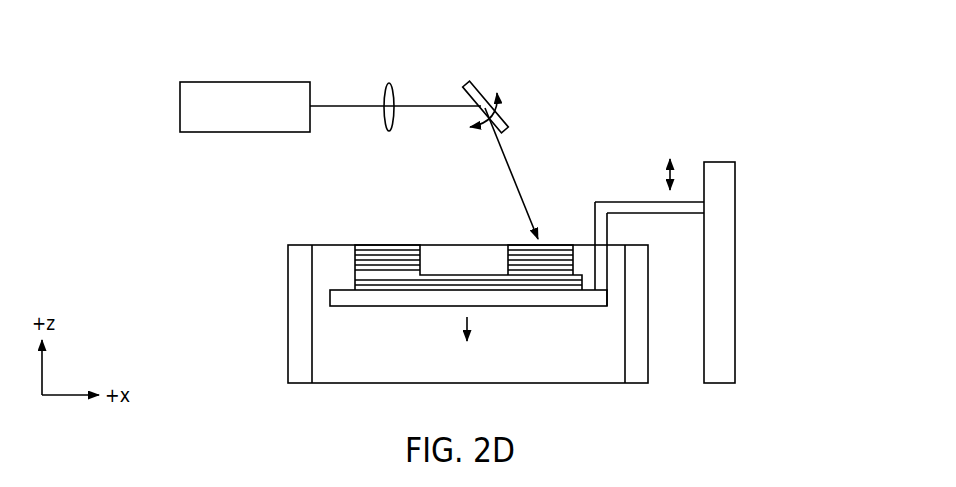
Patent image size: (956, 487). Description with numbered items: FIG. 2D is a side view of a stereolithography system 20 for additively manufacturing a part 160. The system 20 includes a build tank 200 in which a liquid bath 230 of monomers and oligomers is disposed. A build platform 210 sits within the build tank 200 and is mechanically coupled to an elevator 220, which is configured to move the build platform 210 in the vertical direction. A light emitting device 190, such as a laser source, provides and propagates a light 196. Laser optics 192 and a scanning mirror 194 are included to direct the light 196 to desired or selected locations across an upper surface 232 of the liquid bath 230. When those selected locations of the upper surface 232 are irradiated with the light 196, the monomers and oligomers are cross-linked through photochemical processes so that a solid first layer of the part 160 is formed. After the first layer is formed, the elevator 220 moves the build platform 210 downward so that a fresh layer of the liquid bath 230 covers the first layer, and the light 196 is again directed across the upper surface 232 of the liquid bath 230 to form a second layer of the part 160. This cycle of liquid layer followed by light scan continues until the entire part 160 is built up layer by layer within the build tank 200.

The system 20 is at (735, 87).
The light emitting device 190 is at (176, 104).
The laser optics 192 is at (389, 82).
The scanning mirror 194 is at (466, 83).
The light 196 is at (512, 170).
The build tank 200 is at (284, 268).
The build platform 210 is at (520, 299).
The elevator 220 is at (740, 207).
The liquid bath 230 is at (402, 351).
The part 160 is at (378, 241).
The upper surface 232 is at (515, 243).